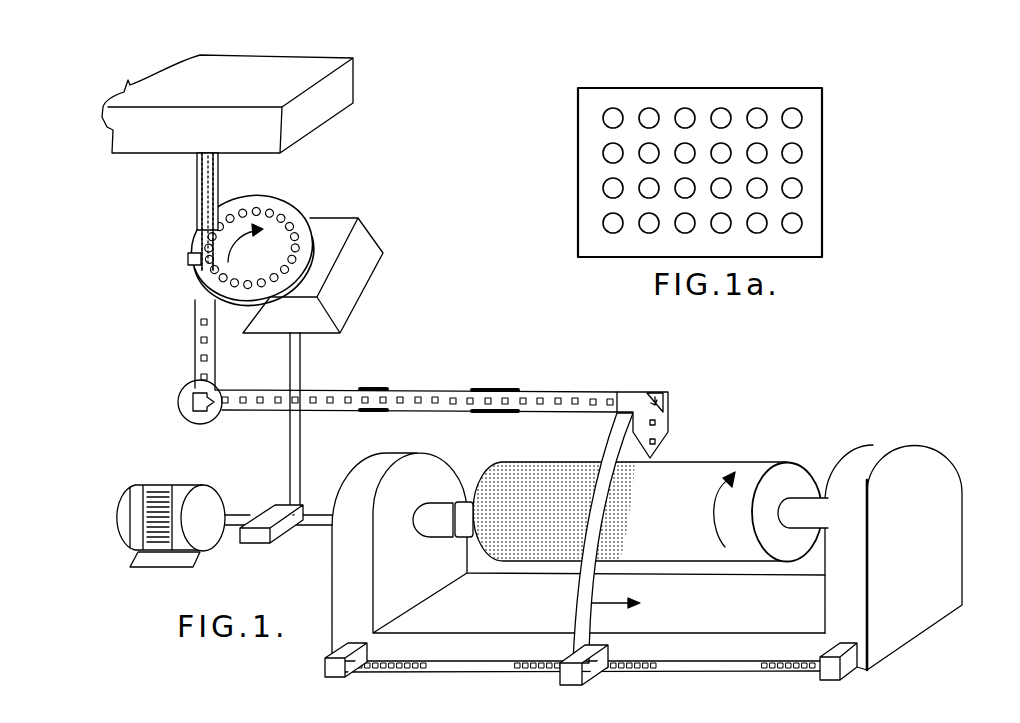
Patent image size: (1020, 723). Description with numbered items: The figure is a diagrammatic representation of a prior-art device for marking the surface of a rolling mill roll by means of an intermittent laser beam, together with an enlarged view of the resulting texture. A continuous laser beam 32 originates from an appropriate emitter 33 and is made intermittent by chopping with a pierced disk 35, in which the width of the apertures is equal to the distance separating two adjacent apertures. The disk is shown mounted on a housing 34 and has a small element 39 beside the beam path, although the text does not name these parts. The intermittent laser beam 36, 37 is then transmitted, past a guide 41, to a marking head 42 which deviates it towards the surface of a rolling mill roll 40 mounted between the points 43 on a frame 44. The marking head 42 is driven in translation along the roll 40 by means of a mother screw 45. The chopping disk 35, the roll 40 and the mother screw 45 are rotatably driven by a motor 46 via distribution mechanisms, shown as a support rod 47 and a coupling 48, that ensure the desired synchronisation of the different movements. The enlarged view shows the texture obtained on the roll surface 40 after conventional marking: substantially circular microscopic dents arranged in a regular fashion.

The continuous laser beam 32 is at (197, 173).
The emitter 33 is at (245, 72).
The drive housing 34 is at (363, 243).
The pierced disk 35 is at (280, 203).
The intermittent laser beam 36 is at (382, 356).
The intermittent laser beam 37 is at (197, 348).
The ejector 39 is at (188, 260).
The rolling mill roll 40 is at (703, 462).
The guide wheel 41 is at (187, 418).
The marking head 42 is at (672, 415).
The points 43 is at (423, 530).
The frame stand 44 is at (942, 555).
The mother screw 45 is at (727, 660).
The motor 46 is at (125, 542).
The support rod 47 is at (300, 437).
The coupling slide 48 is at (308, 537).